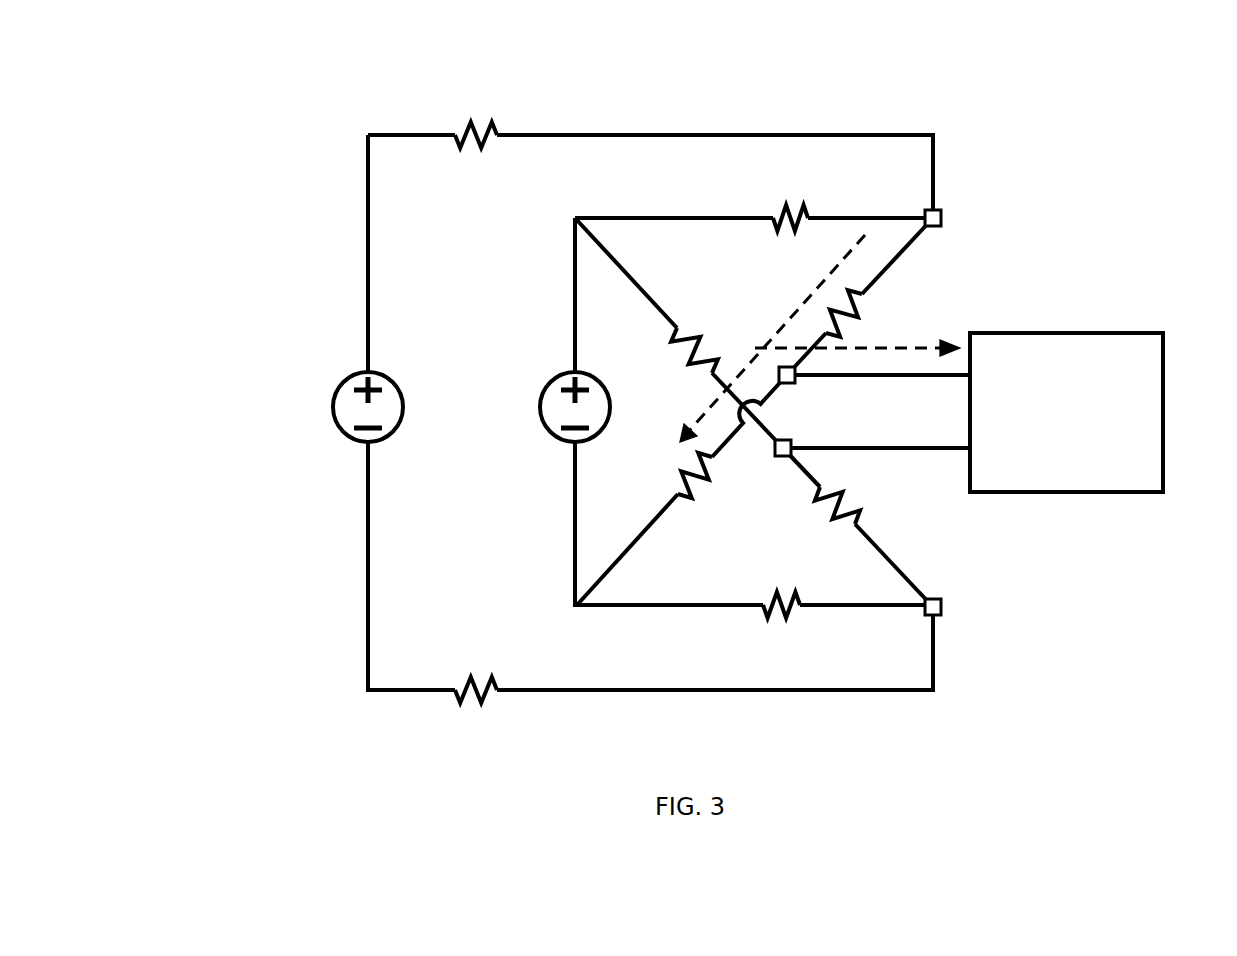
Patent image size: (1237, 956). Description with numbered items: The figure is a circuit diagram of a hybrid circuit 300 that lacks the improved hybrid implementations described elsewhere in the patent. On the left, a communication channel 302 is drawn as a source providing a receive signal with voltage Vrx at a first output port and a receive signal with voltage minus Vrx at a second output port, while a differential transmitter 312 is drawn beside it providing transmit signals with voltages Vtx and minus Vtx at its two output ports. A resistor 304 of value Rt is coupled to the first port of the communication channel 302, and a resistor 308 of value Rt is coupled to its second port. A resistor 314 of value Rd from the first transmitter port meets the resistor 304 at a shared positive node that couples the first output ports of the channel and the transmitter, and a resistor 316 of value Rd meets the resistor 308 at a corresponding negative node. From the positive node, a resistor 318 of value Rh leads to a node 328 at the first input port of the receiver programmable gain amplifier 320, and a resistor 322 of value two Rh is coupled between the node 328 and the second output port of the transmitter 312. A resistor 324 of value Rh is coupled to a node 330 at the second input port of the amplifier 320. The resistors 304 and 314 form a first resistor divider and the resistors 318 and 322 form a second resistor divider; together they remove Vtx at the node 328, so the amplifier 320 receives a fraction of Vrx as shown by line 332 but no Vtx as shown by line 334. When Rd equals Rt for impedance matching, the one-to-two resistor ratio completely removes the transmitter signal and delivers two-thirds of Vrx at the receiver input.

The hybrid circuit 300 is at (248, 126).
The communication channel 302 is at (334, 401).
The resistor 304 is at (485, 118).
The resistor 308 is at (485, 677).
The differential transmitter 312 is at (541, 404).
The resistor 314 is at (793, 202).
The resistor 316 is at (784, 594).
The resistor 318 is at (853, 304).
The receiver programmable gain amplifier 320 is at (1135, 333).
The resistor 322 is at (688, 470).
The resistor 324 is at (855, 520).
The node 328 is at (800, 384).
The node 330 is at (797, 448).
The line 332 is at (940, 328).
The line 334 is at (700, 337).